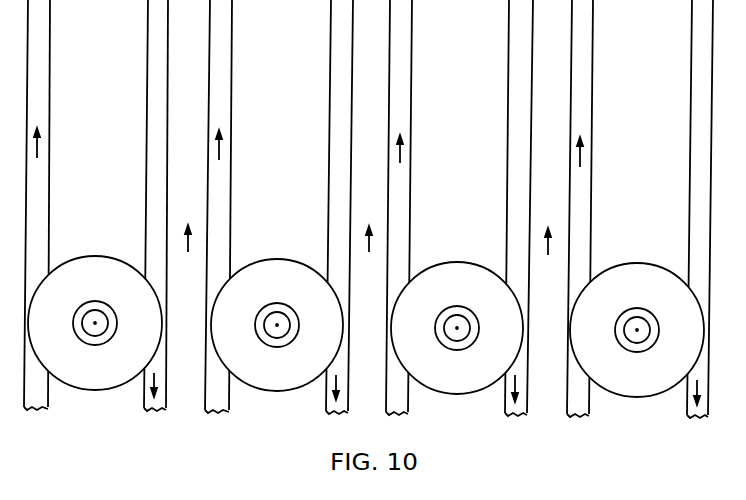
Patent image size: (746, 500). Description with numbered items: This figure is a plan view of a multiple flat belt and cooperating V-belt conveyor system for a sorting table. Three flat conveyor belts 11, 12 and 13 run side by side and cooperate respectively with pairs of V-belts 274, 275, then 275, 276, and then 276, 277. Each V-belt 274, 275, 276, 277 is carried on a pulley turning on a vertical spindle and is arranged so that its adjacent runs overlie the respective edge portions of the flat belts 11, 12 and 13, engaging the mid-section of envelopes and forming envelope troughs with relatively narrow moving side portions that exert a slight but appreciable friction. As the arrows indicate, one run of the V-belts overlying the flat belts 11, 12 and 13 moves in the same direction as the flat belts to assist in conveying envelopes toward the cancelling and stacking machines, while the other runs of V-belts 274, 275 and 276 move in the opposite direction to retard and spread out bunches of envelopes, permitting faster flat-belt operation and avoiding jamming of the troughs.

The V-belt 274 is at (165, 67).
The V-belt 275 is at (212, 107).
The V-belt 276 is at (393, 126).
The V-belt 277 is at (575, 87).
The flat belt 11 is at (191, 198).
The flat belt 12 is at (376, 176).
The flat belt 13 is at (556, 197).